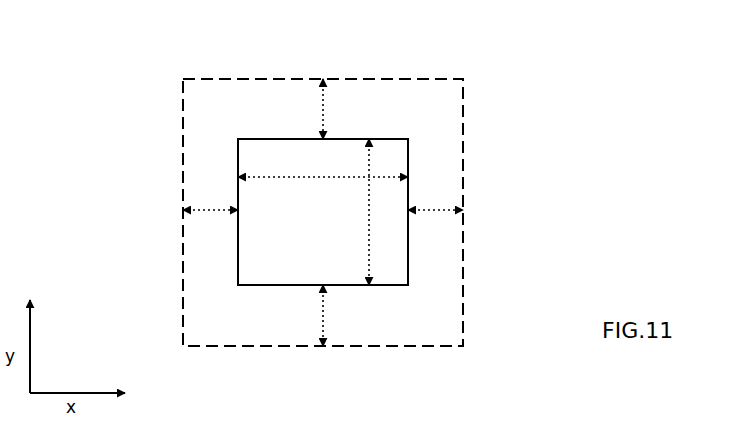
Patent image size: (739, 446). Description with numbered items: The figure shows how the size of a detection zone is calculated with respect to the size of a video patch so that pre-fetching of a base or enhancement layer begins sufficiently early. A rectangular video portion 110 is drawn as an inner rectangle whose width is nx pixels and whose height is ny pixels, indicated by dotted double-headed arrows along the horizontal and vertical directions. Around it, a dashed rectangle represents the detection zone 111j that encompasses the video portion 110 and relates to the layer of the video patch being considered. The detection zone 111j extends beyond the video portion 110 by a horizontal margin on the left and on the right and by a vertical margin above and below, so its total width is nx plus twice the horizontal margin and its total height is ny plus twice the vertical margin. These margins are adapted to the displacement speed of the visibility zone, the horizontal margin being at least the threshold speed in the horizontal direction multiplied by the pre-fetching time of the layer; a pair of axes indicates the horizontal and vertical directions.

The video portion 110 is at (295, 139).
The detection zone 111j is at (393, 79).
The horizontal pixel size of the video portion nx is at (323, 182).
The vertical pixel size of the video portion ny is at (346, 212).